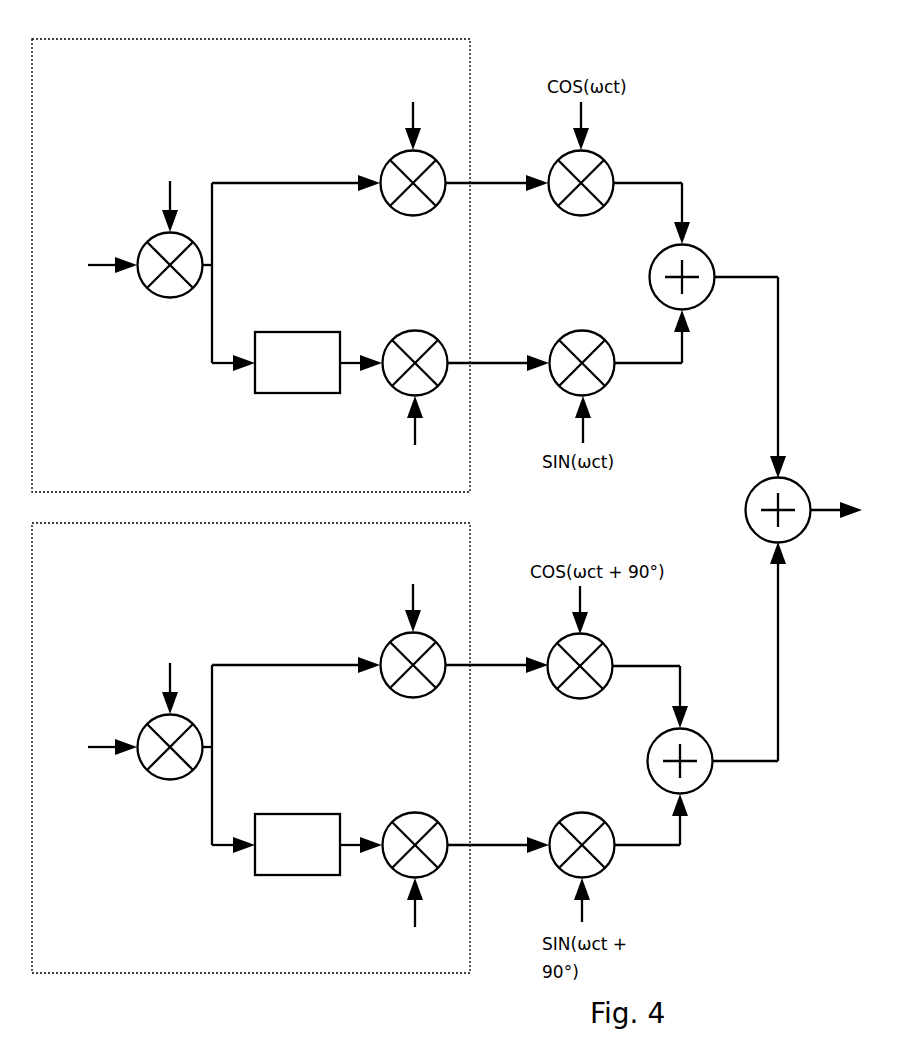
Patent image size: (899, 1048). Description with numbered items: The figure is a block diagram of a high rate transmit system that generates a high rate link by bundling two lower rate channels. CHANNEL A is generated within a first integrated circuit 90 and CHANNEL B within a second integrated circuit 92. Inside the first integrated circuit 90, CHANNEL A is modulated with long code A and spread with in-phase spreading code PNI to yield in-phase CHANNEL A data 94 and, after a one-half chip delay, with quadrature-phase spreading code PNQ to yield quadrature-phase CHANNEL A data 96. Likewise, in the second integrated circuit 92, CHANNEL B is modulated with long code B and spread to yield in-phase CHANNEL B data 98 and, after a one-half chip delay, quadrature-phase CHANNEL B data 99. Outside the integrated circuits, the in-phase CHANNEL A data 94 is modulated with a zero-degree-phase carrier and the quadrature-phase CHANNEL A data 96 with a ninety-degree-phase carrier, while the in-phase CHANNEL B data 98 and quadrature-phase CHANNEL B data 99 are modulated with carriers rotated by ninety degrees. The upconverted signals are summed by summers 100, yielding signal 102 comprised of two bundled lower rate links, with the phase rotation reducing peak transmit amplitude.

The first integrated circuit 90 is at (222, 39).
The second integrated circuit 92 is at (222, 523).
The in-phase CHANNEL A data 94 is at (482, 183).
The quadrature-phase CHANNEL A data 96 is at (482, 363).
The in-phase CHANNEL B data 98 is at (482, 665).
The quadrature-phase CHANNEL B data 99 is at (482, 845).
The summers 100 is at (658, 257).
The signal 102 is at (818, 503).